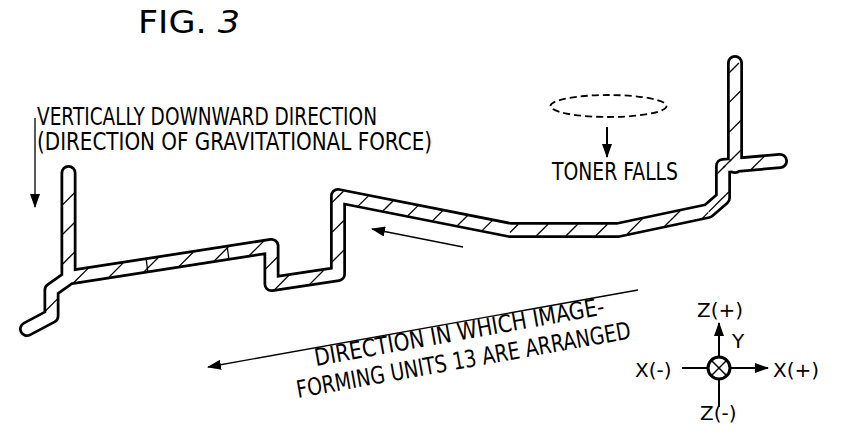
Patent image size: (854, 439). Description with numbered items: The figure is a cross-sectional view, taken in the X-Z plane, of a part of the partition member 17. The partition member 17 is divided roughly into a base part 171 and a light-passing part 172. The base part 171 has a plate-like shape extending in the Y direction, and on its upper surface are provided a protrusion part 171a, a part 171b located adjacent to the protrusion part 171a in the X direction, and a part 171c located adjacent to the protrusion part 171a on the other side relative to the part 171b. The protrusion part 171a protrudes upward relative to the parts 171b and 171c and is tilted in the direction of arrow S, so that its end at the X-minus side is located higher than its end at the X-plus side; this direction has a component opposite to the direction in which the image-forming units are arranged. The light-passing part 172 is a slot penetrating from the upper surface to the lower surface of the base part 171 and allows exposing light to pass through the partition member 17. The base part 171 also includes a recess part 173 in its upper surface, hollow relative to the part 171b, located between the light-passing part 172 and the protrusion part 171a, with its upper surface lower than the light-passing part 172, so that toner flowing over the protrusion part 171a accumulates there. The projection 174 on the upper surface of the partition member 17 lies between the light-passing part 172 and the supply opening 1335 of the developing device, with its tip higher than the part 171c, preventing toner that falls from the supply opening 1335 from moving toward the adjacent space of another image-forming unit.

The partition member 17 is at (406, 186).
The base part 171 is at (391, 243).
The protrusion part 171a is at (395, 193).
The part 171b is at (203, 247).
The part 171c is at (510, 222).
The light-passing part 172 is at (158, 270).
The recess part 173 is at (302, 268).
The projection 174 is at (78, 180).
The supply opening 1335 is at (610, 94).